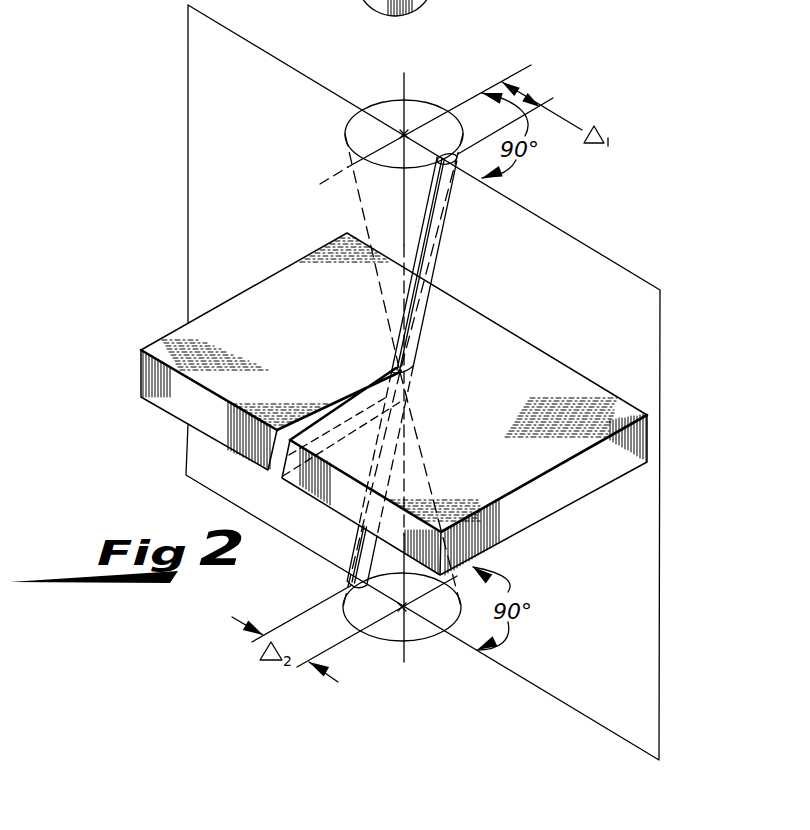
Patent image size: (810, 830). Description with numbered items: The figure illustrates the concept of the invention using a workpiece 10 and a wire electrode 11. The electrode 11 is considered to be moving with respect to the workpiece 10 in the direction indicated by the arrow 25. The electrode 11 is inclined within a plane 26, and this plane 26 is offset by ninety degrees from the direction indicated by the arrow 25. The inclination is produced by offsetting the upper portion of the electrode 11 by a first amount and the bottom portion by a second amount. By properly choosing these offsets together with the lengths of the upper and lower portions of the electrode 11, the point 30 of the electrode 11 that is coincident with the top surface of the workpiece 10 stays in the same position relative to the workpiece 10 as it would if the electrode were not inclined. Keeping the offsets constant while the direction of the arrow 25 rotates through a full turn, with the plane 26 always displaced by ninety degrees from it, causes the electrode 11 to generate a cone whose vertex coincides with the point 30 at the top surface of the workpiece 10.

The workpiece 10 is at (528, 343).
The wire electrode 11 is at (442, 218).
The arrow 25 is at (521, 71).
The plane 26 is at (662, 317).
The point 30 is at (392, 368).